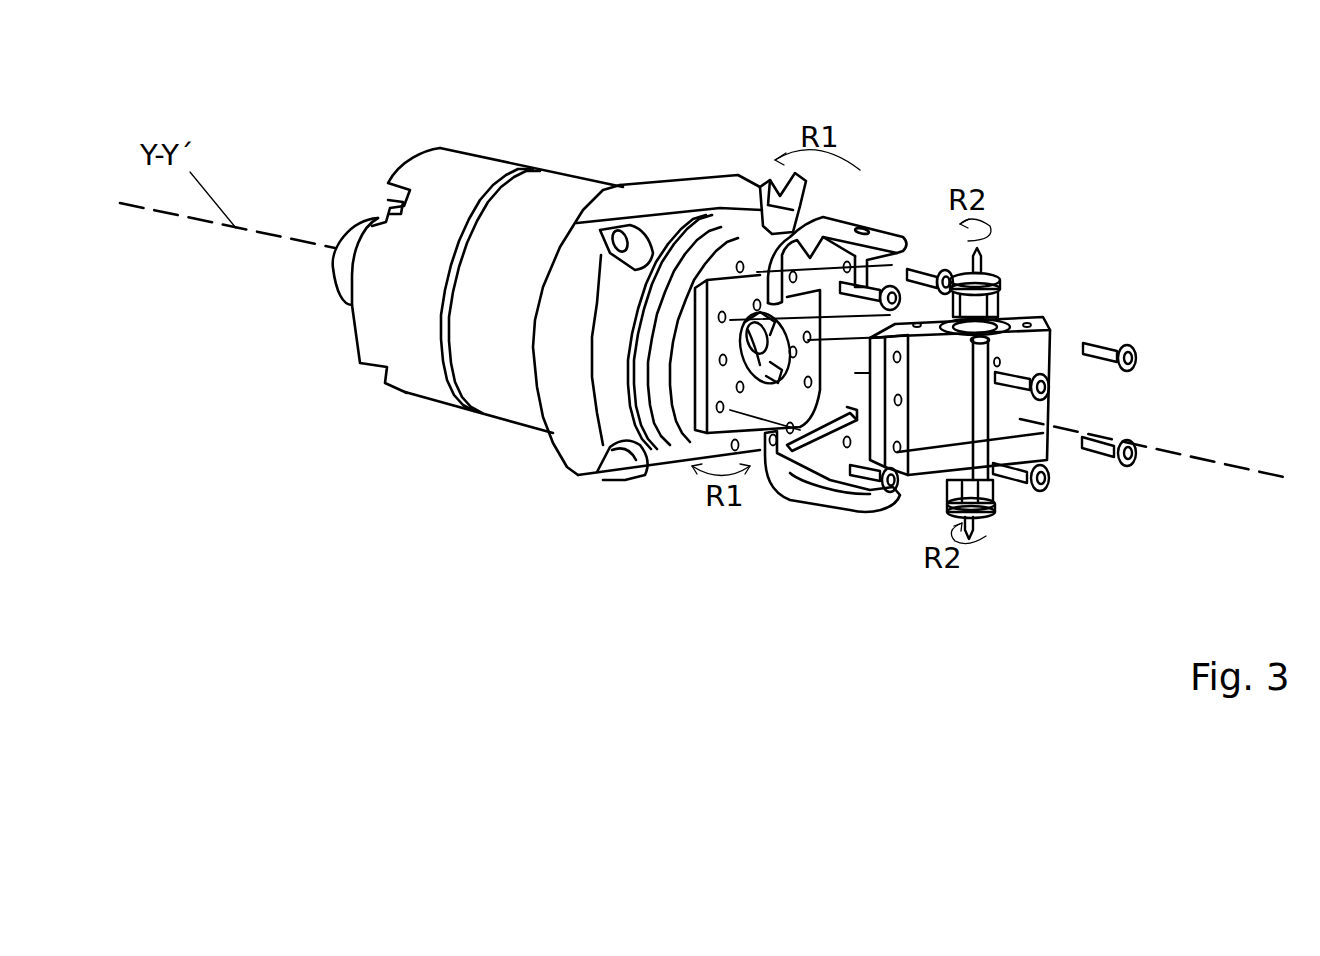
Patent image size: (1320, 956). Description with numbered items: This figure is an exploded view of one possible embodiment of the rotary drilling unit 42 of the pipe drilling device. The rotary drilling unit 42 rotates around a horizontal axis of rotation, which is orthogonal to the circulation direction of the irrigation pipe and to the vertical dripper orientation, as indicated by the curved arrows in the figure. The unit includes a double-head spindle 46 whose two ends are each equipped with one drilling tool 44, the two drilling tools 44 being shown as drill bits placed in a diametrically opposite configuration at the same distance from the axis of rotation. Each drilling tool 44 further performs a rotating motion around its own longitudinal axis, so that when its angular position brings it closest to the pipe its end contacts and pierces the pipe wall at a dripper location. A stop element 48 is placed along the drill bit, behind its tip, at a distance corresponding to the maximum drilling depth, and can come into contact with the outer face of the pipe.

The rotary drilling unit 42 is at (352, 98).
The drilling tool 44 is at (978, 270).
The double-head spindle 46 is at (1033, 355).
The stop element 48 is at (842, 228).